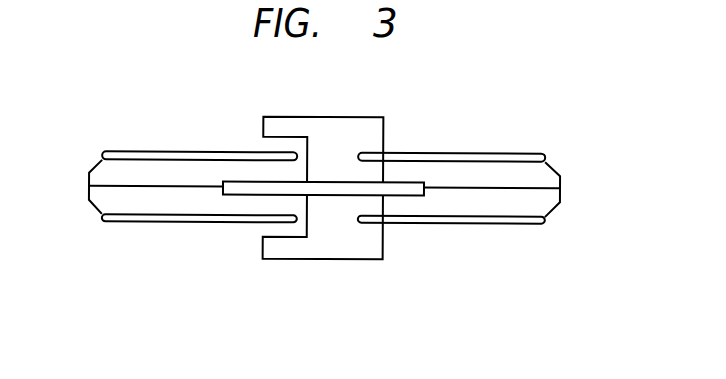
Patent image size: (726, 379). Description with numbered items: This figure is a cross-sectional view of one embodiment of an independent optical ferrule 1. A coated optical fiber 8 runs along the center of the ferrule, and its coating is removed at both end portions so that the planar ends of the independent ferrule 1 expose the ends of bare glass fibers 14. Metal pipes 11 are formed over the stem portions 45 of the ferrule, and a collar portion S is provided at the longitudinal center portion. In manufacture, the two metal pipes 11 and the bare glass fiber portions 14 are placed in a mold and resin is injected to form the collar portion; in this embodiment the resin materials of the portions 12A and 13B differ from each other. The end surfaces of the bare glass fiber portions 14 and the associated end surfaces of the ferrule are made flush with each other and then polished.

The independent optical ferrule 1 is at (560, 97).
The coated optical fiber 8 is at (227, 181).
The metal pipe 11 is at (453, 226).
The resin member 12A is at (142, 164).
The resin portion 13B is at (382, 141).
The bare glass fiber 14 is at (92, 189).
The stem portion 45 is at (497, 213).
The collar portion S is at (281, 117).